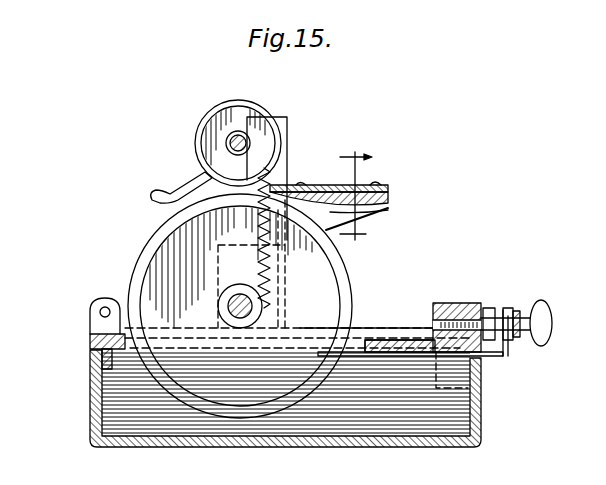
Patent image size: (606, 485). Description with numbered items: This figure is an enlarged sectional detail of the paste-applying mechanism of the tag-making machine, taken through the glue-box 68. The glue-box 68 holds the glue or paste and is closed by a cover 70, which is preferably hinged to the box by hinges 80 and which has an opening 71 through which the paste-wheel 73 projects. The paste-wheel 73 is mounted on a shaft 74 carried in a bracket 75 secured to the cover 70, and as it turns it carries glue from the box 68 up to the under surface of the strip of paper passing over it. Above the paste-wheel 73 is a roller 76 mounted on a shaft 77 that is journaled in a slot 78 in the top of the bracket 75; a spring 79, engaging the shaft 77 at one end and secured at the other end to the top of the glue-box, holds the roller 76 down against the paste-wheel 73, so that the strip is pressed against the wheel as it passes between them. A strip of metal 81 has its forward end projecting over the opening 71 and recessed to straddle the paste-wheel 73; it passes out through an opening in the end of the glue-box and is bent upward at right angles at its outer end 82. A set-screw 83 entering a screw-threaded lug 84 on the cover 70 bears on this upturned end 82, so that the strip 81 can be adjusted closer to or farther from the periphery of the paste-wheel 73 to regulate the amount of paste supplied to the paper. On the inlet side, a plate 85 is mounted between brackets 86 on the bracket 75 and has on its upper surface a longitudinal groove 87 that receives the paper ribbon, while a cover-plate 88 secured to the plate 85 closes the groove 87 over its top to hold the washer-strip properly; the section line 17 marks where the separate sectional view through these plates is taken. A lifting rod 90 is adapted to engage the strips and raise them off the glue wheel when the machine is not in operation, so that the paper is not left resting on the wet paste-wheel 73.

The glue-box 68 is at (437, 422).
The cover 70 is at (92, 342).
The opening 71 is at (358, 344).
The paste-wheel 73 is at (160, 250).
The shaft 74 is at (262, 304).
The bracket 75 is at (282, 172).
The roller 76 is at (234, 108).
The shaft 77 is at (248, 138).
The slot 78 is at (242, 110).
The spring 79 is at (297, 258).
The hinge 80 is at (105, 307).
The strip of metal 81 is at (378, 356).
The upturned end 82 is at (508, 342).
The set-screw 83 is at (545, 320).
The screw-threaded lug 84 is at (462, 310).
The plate 85 is at (356, 185).
The bracket 86 is at (360, 214).
The longitudinal groove 87 is at (390, 196).
The cover-plate 88 is at (328, 185).
The lifting rod 90 is at (162, 196).
The section line 17 is at (361, 194).